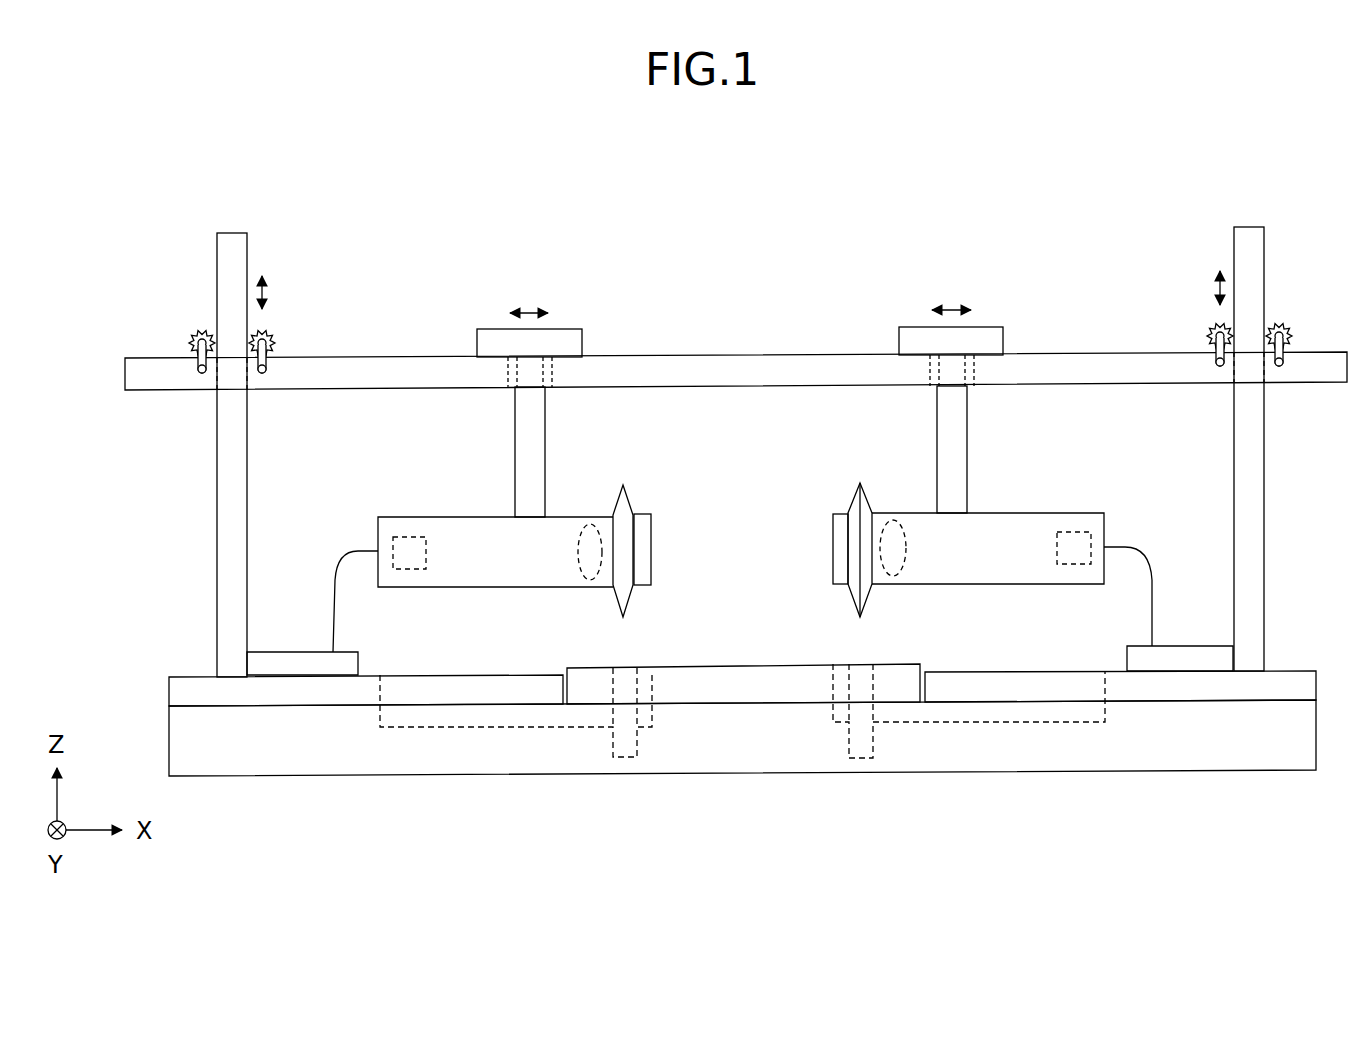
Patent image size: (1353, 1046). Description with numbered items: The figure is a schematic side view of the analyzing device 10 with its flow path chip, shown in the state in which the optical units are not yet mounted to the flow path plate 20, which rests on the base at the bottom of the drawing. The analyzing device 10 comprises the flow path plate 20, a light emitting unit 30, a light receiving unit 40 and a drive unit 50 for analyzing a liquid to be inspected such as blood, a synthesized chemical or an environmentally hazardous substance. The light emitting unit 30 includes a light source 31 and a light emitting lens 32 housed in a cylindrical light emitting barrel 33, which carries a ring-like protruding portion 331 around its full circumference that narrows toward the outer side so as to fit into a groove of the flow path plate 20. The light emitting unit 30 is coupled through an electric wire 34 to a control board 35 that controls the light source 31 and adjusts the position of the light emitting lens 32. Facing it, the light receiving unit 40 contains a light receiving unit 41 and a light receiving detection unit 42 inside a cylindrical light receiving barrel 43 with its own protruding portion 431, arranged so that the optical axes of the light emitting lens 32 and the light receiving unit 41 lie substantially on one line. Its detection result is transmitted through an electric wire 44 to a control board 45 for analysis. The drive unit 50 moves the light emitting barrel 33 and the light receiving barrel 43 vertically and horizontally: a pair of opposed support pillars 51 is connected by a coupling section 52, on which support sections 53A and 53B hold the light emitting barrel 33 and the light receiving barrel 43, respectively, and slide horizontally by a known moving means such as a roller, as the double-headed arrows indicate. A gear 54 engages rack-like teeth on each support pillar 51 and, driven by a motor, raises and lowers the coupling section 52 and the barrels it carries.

The analyzing device 10 is at (914, 250).
The flow path plate 20 is at (747, 664).
The light emitting unit 30 is at (523, 524).
The light source 31 is at (411, 535).
The light emitting lens 32 is at (590, 524).
The light emitting barrel 33 is at (489, 517).
The protruding portion 331 is at (630, 497).
The electric wire 34 is at (336, 585).
The control board 35 is at (280, 652).
The light receiving unit 40 is at (961, 524).
The light receiving unit 41 is at (893, 520).
The light receiving detection unit 42 is at (1073, 530).
The light receiving barrel 43 is at (995, 513).
The protruding portion 431 is at (853, 500).
The electric wire 44 is at (1150, 580).
The control board 45 is at (1205, 646).
The drive unit 50 is at (740, 418).
The support pillar 51 is at (217, 506).
The coupling section 52 is at (373, 357).
The support section 53A is at (515, 418).
The support section 53B is at (967, 415).
The gear 54 is at (195, 333).